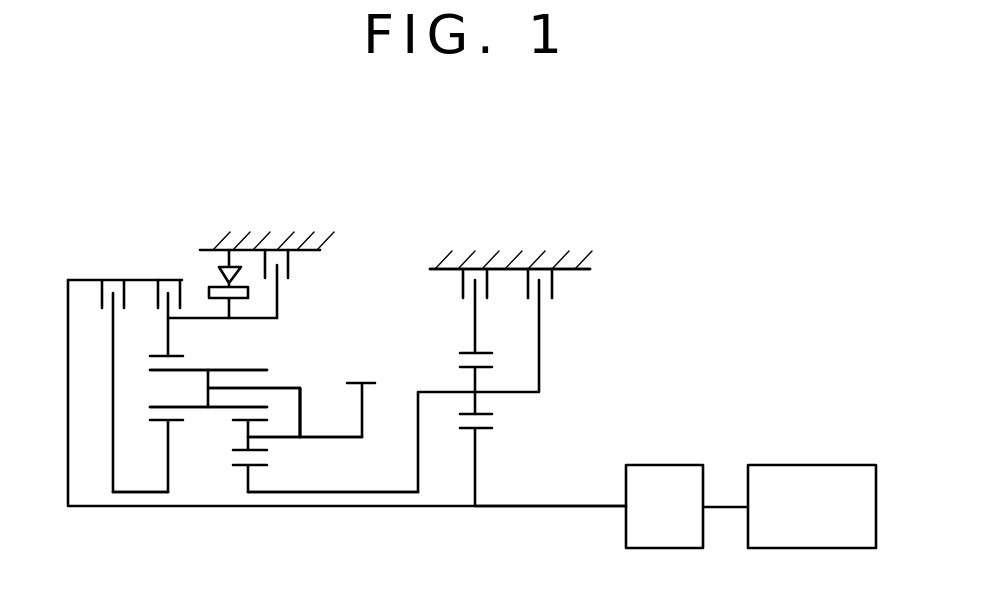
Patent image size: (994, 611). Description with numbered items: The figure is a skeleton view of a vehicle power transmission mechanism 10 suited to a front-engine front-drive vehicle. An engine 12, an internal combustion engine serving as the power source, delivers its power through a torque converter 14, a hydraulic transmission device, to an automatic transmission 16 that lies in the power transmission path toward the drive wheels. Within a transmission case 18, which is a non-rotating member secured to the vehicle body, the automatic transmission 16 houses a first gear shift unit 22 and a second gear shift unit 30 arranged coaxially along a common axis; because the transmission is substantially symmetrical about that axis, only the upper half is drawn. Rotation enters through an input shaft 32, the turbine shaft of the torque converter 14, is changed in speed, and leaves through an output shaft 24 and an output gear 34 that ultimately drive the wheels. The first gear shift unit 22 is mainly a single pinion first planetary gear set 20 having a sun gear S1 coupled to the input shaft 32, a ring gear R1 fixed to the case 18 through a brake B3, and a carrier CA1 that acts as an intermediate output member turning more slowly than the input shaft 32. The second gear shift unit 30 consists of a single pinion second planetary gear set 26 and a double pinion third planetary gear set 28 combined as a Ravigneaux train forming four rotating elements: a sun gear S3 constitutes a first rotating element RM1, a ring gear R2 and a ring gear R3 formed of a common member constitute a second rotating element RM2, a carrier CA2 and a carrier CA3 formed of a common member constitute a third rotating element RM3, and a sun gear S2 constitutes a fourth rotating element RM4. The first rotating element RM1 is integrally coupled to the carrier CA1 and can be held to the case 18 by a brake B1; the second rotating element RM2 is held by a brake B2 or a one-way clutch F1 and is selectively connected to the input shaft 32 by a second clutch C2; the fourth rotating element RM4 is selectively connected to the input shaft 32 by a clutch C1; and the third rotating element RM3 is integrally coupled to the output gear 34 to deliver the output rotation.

The vehicle power transmission mechanism 10 is at (796, 260).
The engine 12 is at (854, 469).
The torque converter 14 is at (680, 469).
The automatic transmission 16 is at (648, 284).
The transmission case 18 is at (286, 238).
The first planetary gear set 20 is at (476, 512).
The first gear shift unit 22 is at (312, 289).
The output shaft 24 is at (356, 437).
The second planetary gear set 26 is at (169, 502).
The third planetary gear set 28 is at (249, 502).
The second gear shift unit 30 is at (258, 274).
The input shaft 32 is at (562, 509).
The output gear 34 is at (376, 383).
The clutch C1 is at (95, 294).
The second clutch C2 is at (150, 294).
The brake B1 is at (553, 285).
The brake B2 is at (291, 266).
The brake B3 is at (463, 288).
The one-way clutch F1 is at (220, 284).
The ring gear R1 is at (486, 350).
The ring gear R2 is at (184, 356).
The ring gear R3 is at (208, 388).
The sun gear S1 is at (492, 430).
The sun gear S2 is at (173, 423).
The sun gear S3 is at (263, 468).
The carrier CA1 is at (541, 368).
The carrier CA2 is at (254, 412).
The carrier CA3 is at (288, 388).
The first rotating element RM1 is at (315, 492).
The second rotating element RM2 is at (197, 316).
The third rotating element RM3 is at (326, 436).
The fourth rotating element RM4 is at (170, 463).